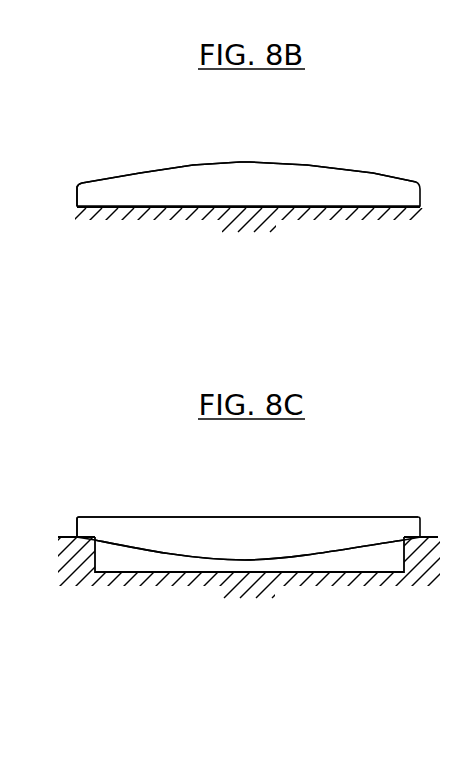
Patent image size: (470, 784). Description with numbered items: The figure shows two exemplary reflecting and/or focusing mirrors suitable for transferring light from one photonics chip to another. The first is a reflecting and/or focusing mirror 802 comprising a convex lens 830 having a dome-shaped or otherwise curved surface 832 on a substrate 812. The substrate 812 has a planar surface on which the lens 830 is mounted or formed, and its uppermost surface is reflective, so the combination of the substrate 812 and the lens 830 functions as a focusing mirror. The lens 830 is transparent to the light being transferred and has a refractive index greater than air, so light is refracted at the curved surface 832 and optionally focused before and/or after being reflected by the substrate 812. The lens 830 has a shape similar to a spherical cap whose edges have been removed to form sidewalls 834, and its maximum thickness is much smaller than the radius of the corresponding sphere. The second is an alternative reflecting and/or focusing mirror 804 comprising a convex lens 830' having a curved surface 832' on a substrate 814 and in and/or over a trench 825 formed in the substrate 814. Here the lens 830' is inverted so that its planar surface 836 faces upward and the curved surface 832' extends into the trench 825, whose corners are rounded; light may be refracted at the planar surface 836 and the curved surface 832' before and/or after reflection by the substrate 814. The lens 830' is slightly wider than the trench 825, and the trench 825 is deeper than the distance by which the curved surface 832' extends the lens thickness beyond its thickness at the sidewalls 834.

In FIG. 8B, the reflecting and/or focusing mirror 802 is at (233, 150).
In FIG. 8C, the alternative reflecting and/or focusing mirror 804 is at (247, 546).
In FIG. 8B, the substrate 812 is at (268, 251).
In FIG. 8C, the substrate 814 is at (267, 616).
In FIG. 8C, the trench 825 is at (120, 558).
In FIG. 8B, the convex lens 830 is at (248, 184).
In FIG. 8C, the convex lens 830' is at (248, 538).
In FIG. 8B, the curved surface 832 is at (249, 148).
In FIG. 8C, the curved surface 832' is at (249, 591).
In FIG. 8B, the sidewalls 834 is at (77, 198).
In FIG. 8C, the sidewalls 834 is at (80, 519).
In FIG. 8C, the planar surface 836 is at (317, 517).